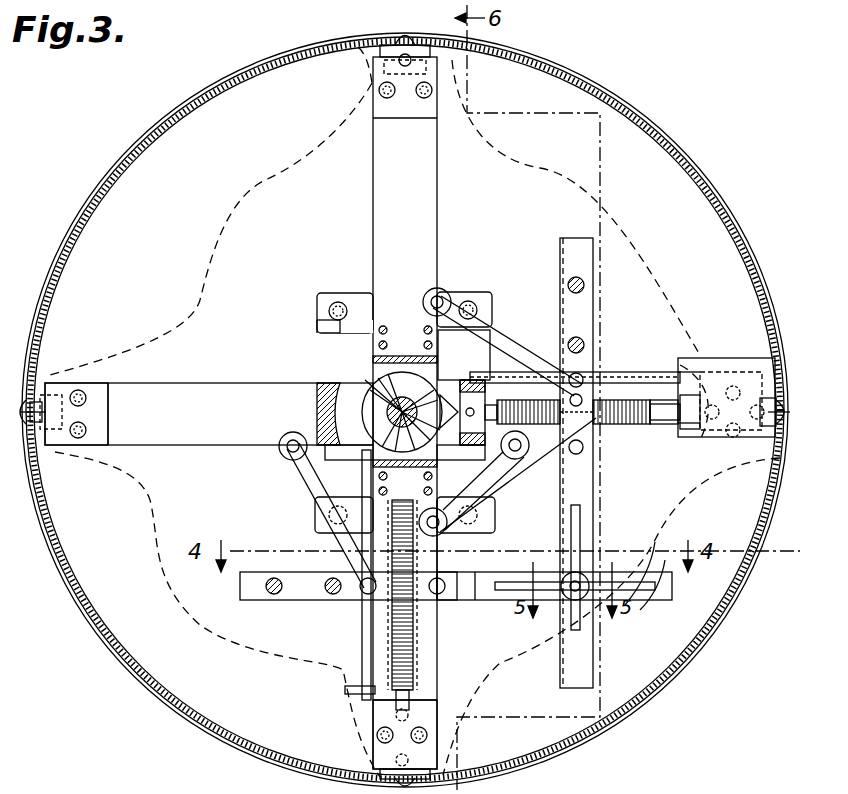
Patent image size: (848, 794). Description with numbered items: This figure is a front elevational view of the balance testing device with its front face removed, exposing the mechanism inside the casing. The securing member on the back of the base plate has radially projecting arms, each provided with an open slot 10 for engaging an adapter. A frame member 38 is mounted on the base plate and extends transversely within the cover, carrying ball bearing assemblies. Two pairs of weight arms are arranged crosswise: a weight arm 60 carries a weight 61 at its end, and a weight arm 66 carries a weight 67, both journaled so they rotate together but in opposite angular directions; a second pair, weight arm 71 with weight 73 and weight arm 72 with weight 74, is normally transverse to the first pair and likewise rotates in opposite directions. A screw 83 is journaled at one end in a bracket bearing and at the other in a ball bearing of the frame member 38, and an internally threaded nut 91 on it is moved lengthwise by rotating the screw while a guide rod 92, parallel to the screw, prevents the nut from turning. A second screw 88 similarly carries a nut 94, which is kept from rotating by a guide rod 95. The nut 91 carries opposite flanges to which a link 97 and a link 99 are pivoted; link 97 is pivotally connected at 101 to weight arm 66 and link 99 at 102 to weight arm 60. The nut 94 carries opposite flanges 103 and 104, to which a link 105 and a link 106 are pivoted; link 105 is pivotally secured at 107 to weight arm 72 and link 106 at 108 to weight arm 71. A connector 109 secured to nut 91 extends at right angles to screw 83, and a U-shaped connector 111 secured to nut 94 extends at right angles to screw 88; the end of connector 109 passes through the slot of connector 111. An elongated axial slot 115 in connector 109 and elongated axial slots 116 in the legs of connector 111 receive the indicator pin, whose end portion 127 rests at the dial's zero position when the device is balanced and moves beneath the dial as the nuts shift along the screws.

The open slot 10 is at (735, 395).
The frame member 38 is at (338, 296).
The weight arm 60 is at (240, 383).
The weight 61 is at (118, 392).
The weight arm 66 is at (690, 440).
The weight 67 is at (700, 435).
The weight arm 71 is at (437, 228).
The weight arm 72 is at (437, 665).
The weight 73 is at (392, 122).
The weight 74 is at (420, 692).
The screw 83 is at (418, 642).
The screw 88 is at (648, 426).
The internally threaded nut 91 is at (440, 600).
The guide rod 92 is at (356, 622).
The nut 94 is at (590, 398).
The guide rod 95 is at (632, 374).
The link 97 is at (470, 560).
The link 99 is at (306, 500).
The pivotal connection 101 is at (505, 452).
The pivotal connection 102 is at (287, 456).
The flange 103 is at (585, 452).
The flange 104 is at (590, 380).
The link 105 is at (540, 482).
The link 106 is at (512, 332).
The pivotal connection 107 is at (436, 536).
The pivotal connection 108 is at (443, 290).
The connector 109 is at (478, 600).
The connector 111 is at (582, 482).
The elongated axial slot 115 is at (650, 570).
The elongated axial slot 116 is at (578, 535).
The end portion of indicator pin 127 is at (568, 600).